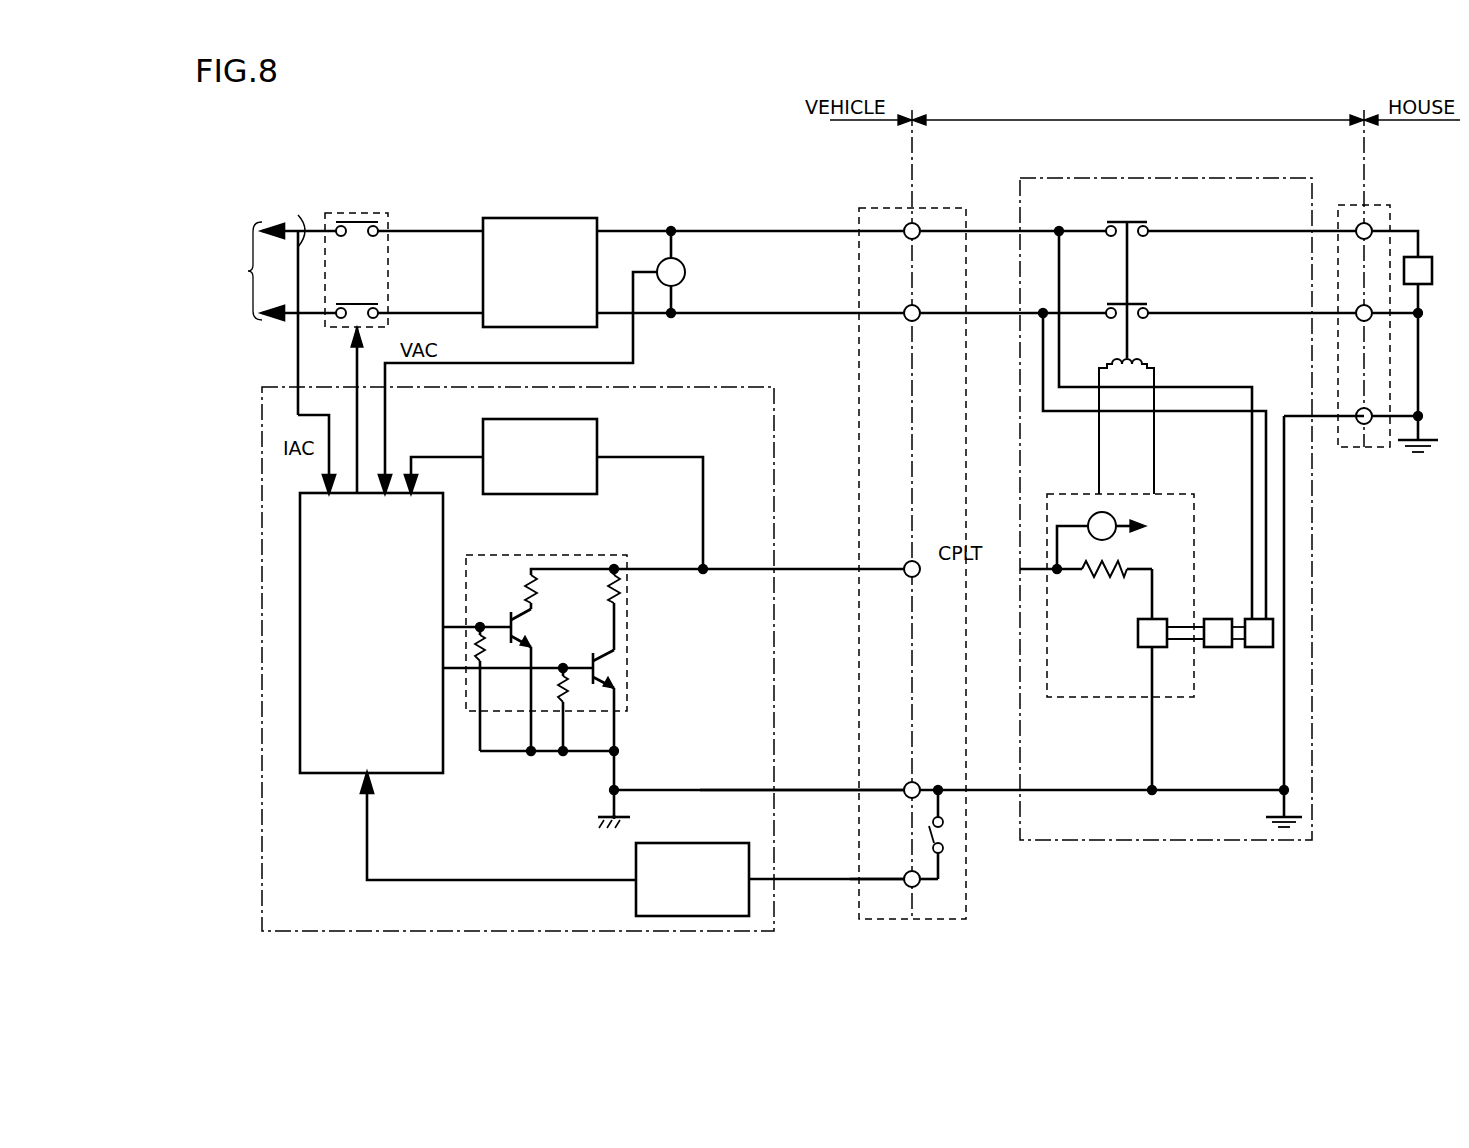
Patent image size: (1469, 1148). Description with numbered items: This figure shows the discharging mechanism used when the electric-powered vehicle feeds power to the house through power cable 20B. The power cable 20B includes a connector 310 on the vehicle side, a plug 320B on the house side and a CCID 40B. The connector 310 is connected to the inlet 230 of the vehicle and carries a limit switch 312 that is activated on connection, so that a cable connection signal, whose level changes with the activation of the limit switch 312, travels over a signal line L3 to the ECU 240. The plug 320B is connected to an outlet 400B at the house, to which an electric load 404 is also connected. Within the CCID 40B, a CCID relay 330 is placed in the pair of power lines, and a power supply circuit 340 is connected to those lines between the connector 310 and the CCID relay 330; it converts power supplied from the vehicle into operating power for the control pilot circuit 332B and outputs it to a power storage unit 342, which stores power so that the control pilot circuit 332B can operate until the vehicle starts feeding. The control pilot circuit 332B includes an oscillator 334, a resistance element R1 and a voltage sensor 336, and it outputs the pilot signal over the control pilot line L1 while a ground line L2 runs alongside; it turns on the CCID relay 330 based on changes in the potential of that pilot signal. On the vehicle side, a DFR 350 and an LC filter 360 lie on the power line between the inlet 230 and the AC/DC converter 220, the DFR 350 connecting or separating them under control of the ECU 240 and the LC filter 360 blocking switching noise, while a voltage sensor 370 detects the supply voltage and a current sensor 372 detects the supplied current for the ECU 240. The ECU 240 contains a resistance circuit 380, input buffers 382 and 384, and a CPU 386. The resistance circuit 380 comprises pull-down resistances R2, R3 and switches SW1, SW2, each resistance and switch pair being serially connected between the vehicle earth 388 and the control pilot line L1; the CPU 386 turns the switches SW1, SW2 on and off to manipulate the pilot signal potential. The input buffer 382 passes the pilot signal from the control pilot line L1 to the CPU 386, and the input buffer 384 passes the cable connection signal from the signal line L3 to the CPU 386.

The power cable for power feeding 20B is at (1145, 110).
The AC/DC converter 220 is at (186, 271).
The inlet 230 is at (880, 208).
The ECU 240 is at (730, 386).
The connector 310 is at (938, 208).
The limit switch 312 is at (953, 836).
The plug 320B is at (1349, 205).
The CCID relay 330 is at (1127, 210).
The control pilot circuit 332B is at (1186, 492).
The oscillator 334 is at (1162, 619).
The voltage sensor 336 is at (1116, 537).
The power supply circuit 340 is at (1260, 647).
The power storage unit 342 is at (1218, 647).
The DFR 350 is at (388, 258).
The LC filter 360 is at (531, 218).
The voltage sensor 370 is at (686, 272).
The current sensor 372 is at (299, 222).
The resistance circuit 380 is at (553, 555).
The input buffer 382 is at (531, 420).
The input buffer 384 is at (682, 842).
The CPU 386 is at (320, 775).
The vehicle earth 388 is at (609, 832).
The outlet 400B is at (1378, 205).
The electric load 404 is at (1426, 256).
The CCID 40B is at (1211, 178).
The resistance element R1 is at (1103, 574).
The pull-down resistance R2 is at (522, 588).
The pull-down resistance R3 is at (604, 588).
The switch SW1 is at (522, 630).
The switch SW2 is at (606, 670).
The control pilot line L1 is at (816, 566).
The ground line L2 is at (816, 786).
The signal line L3 is at (817, 882).